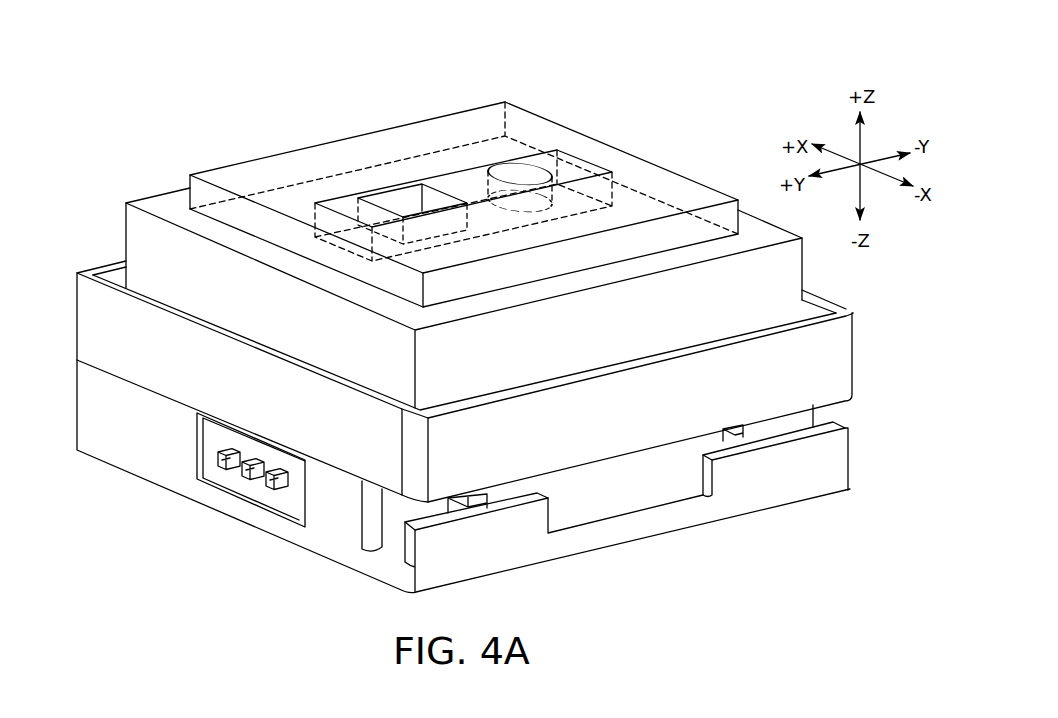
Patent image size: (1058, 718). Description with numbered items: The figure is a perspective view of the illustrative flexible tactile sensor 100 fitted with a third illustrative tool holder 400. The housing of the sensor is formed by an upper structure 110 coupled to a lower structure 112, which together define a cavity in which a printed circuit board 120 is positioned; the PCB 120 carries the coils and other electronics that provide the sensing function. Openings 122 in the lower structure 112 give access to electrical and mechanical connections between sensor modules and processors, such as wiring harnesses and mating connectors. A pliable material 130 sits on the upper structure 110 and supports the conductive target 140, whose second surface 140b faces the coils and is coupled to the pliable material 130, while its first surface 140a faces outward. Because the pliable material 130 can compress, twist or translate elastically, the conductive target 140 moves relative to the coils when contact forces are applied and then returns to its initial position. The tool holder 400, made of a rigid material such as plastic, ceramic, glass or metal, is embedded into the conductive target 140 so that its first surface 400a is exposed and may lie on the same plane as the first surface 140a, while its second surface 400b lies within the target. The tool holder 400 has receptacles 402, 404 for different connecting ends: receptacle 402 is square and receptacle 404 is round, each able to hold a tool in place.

The flexible tactile sensor 100 is at (767, 112).
The upper structure 110 is at (77, 313).
The lower structure 112 is at (77, 398).
The printed circuit board 120 is at (233, 440).
The openings 122 is at (240, 503).
The pliable material 130 is at (131, 228).
The conductive target 140 is at (225, 177).
The first surface of the conductive target 140a is at (720, 201).
The second surface of the conductive target 140b is at (687, 249).
The tool holder 400 is at (445, 168).
The first surface of the tool holder 400a is at (565, 153).
The second surface of the tool holder 400b is at (613, 214).
The receptacle 402 is at (387, 202).
The receptacle 404 is at (505, 168).